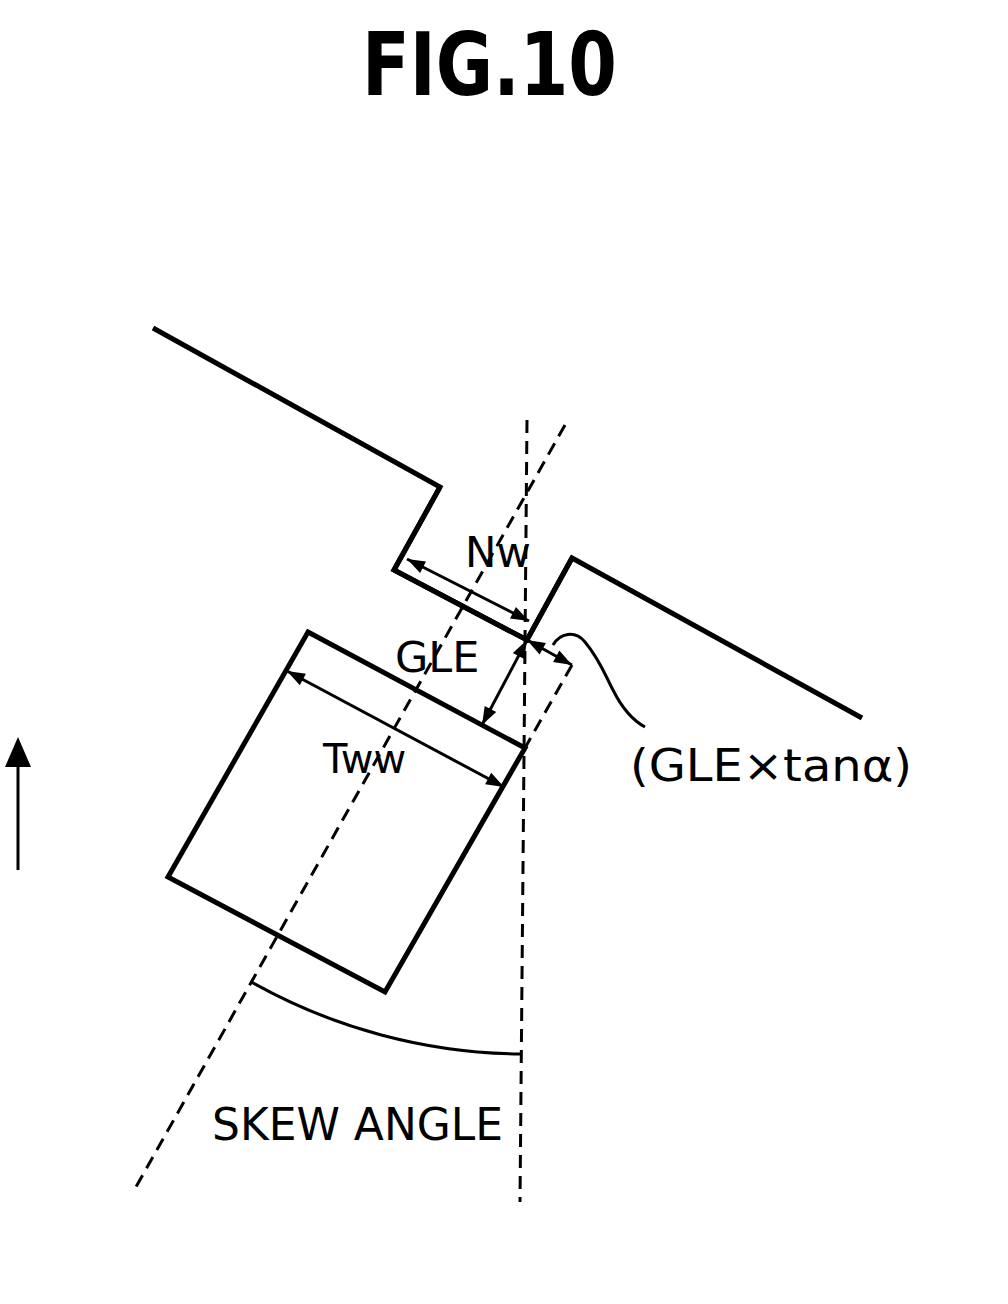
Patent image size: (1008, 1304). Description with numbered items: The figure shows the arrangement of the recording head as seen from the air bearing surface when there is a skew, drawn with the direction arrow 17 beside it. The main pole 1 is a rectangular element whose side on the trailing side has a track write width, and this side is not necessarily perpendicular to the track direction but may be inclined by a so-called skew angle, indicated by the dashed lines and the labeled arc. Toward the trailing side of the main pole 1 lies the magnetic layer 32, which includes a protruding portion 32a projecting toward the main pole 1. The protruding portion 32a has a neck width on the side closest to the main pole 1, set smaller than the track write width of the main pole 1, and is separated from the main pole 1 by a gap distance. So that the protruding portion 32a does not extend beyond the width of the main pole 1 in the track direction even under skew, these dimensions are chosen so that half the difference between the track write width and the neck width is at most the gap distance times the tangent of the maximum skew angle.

The main pole 1 is at (260, 748).
The magnetic layer 32 is at (297, 383).
The protruding portion 32a is at (437, 533).
The direction of medium movement 17 is at (54, 803).